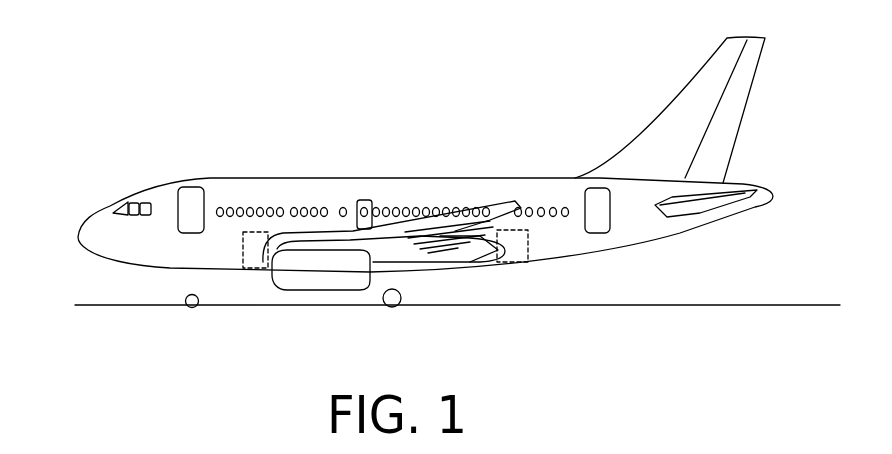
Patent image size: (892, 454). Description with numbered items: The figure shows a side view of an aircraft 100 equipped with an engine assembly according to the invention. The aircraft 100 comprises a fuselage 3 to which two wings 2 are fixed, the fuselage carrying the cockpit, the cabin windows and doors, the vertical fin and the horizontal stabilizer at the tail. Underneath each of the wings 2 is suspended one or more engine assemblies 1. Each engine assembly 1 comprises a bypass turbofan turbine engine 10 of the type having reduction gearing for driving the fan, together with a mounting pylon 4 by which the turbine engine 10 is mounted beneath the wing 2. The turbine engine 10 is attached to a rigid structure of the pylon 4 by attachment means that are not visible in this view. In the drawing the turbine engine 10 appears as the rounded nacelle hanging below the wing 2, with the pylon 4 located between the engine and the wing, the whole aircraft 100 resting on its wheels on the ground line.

The aircraft 100 is at (339, 114).
The fuselage 3 is at (275, 184).
The wing 2 is at (423, 224).
The engine assembly 1 is at (318, 294).
The bypass turbofan turbine engine 10 is at (285, 288).
The mounting pylon 4 is at (468, 260).